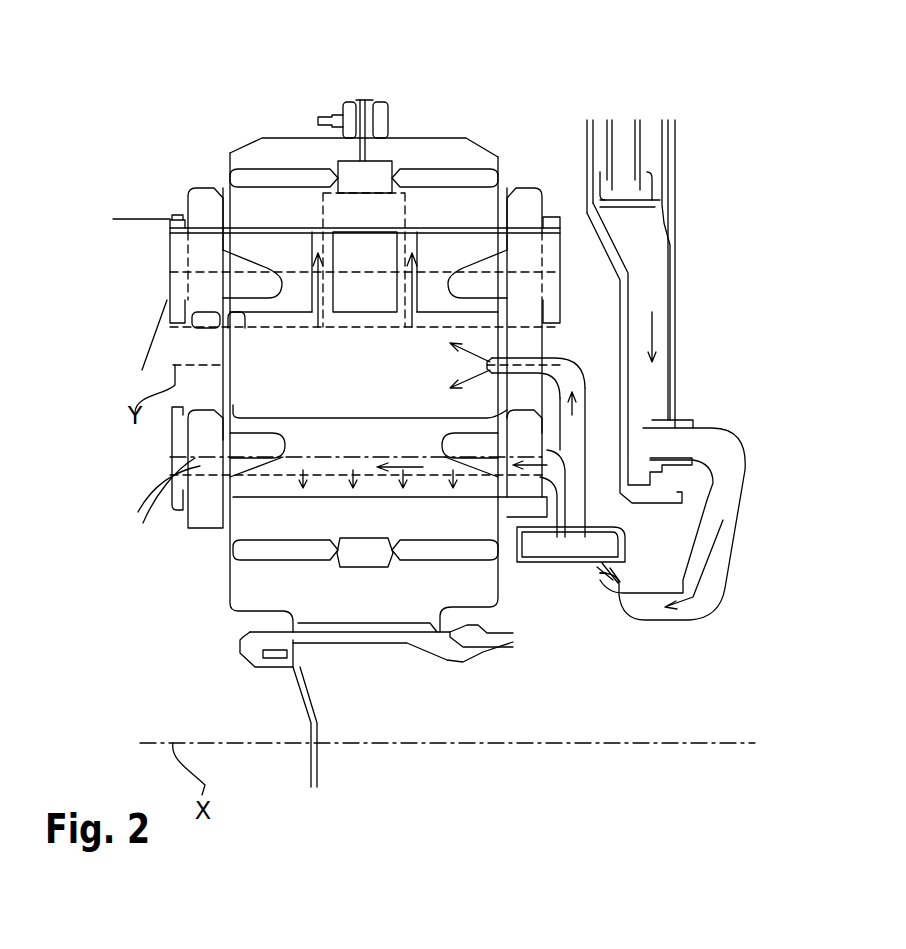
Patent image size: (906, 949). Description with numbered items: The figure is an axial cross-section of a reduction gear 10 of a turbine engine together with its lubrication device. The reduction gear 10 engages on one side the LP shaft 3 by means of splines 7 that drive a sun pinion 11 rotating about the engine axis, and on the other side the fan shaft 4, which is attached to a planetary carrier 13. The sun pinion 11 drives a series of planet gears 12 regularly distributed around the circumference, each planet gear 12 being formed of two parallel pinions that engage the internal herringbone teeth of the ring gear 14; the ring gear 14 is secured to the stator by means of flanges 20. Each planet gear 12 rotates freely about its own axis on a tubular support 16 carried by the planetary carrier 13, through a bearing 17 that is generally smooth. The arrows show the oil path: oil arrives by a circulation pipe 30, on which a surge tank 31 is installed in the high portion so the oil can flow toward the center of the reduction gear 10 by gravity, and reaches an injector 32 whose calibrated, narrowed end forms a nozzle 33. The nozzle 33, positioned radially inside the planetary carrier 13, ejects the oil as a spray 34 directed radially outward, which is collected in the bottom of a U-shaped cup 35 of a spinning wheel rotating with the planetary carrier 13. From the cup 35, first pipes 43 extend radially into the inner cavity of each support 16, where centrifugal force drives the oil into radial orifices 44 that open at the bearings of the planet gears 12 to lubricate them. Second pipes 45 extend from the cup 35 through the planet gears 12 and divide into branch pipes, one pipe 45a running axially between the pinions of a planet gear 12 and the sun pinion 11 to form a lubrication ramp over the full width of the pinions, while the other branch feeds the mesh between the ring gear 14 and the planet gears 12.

The reduction gear 10 is at (205, 107).
The flanges 20 is at (360, 98).
The bearing 17 is at (282, 228).
The ring gear 14 is at (475, 157).
The planet gears 12 is at (493, 197).
The planetary carrier 13 is at (205, 205).
The fan shaft 4 is at (140, 237).
The circulation pipe 30 is at (650, 142).
The surge tank 31 is at (647, 255).
The tubular support 16 is at (362, 283).
The orifices 44 is at (312, 317).
The first pipes 43 is at (553, 345).
The second pipes 45 is at (552, 453).
The pipe 45a is at (327, 458).
The injector 32 is at (732, 487).
The cup 35 is at (627, 553).
The spray 34 is at (607, 577).
The nozzle 33 is at (620, 613).
The sun pinion 11 is at (253, 580).
The splines 7 is at (357, 637).
The LP shaft 3 is at (463, 647).